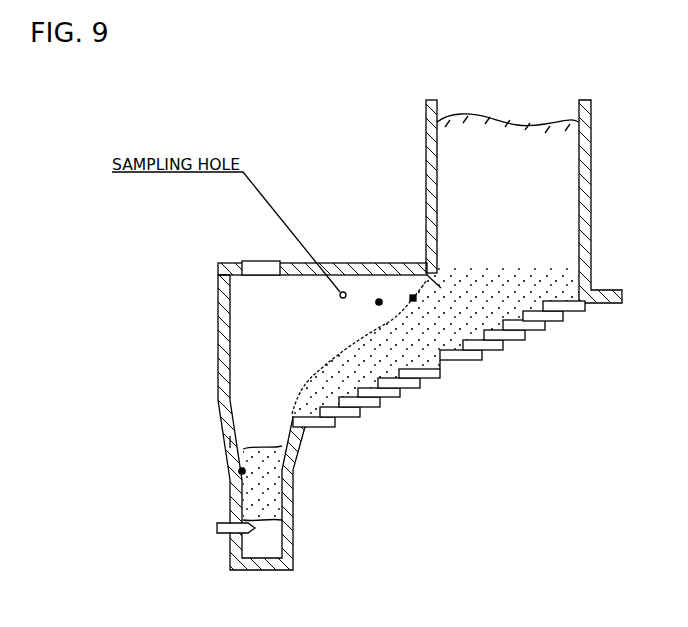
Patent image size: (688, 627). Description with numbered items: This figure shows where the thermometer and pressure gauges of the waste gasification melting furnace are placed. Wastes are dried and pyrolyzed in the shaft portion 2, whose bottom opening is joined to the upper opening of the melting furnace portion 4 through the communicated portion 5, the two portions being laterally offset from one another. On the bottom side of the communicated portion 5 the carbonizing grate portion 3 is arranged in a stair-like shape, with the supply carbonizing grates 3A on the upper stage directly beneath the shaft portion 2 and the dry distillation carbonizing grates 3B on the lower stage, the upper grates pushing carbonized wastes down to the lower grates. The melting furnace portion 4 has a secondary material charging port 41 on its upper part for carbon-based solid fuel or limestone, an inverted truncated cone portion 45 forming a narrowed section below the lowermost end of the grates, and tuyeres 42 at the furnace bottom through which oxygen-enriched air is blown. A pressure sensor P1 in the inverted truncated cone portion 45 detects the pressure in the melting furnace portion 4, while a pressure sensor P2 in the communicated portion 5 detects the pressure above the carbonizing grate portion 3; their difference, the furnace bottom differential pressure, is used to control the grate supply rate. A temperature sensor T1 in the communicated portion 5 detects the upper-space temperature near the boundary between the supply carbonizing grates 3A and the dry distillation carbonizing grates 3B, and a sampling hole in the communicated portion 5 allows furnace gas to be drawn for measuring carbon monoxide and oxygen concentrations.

The shaft portion 2 is at (585, 203).
The carbonizing grate portion 3 is at (439, 386).
The supply carbonizing grates 3A is at (515, 356).
The dry distillation carbonizing grates 3B is at (424, 396).
The melting furnace portion 4 is at (238, 485).
The communicated portion 5 is at (333, 263).
The secondary material charging port 41 is at (256, 261).
The tuyeres 42 is at (245, 530).
The inverted truncated cone portion 45 is at (230, 443).
The pressure sensor P1 is at (240, 470).
The pressure sensor P2 is at (379, 299).
The temperature sensor T1 is at (413, 295).